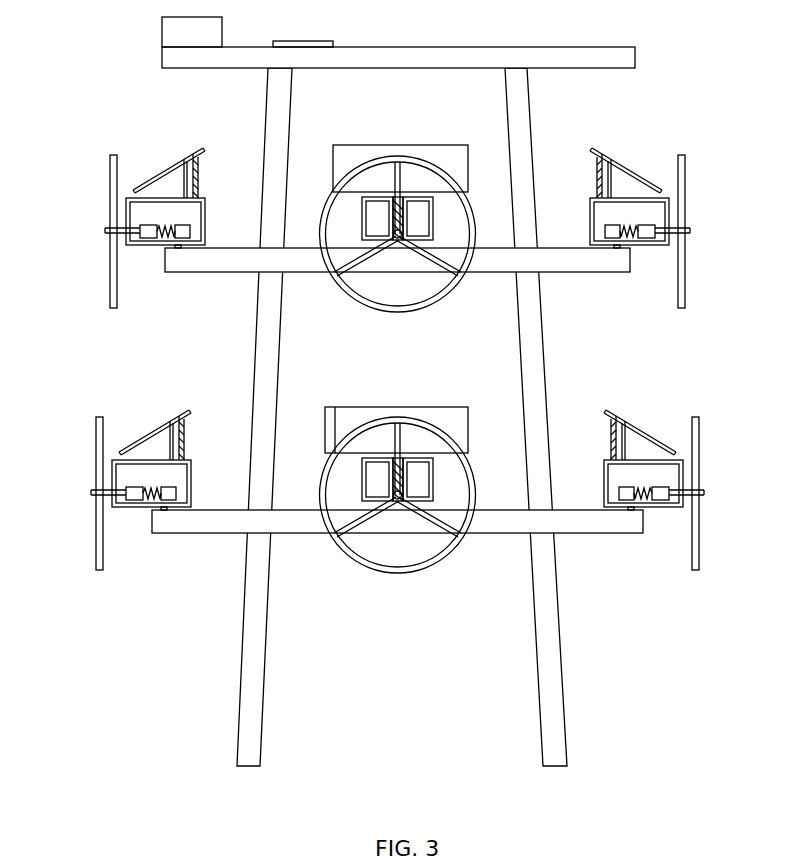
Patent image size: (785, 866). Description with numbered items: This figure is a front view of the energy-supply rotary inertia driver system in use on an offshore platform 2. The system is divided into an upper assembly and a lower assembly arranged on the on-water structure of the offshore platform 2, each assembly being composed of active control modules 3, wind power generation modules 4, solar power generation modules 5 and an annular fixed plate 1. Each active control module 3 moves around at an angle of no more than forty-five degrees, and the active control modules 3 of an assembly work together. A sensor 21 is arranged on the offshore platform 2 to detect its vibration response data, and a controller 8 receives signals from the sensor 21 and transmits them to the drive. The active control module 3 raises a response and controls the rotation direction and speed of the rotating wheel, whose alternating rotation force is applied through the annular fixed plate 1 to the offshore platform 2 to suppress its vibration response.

The annular fixed plate 1 is at (348, 604).
The offshore platform 2 is at (177, 417).
The active control module 3 is at (127, 226).
The wind power generation module 4 is at (669, 515).
The solar power generation module 5 is at (656, 177).
The controller 8 is at (398, 36).
The sensor 21 is at (131, 56).